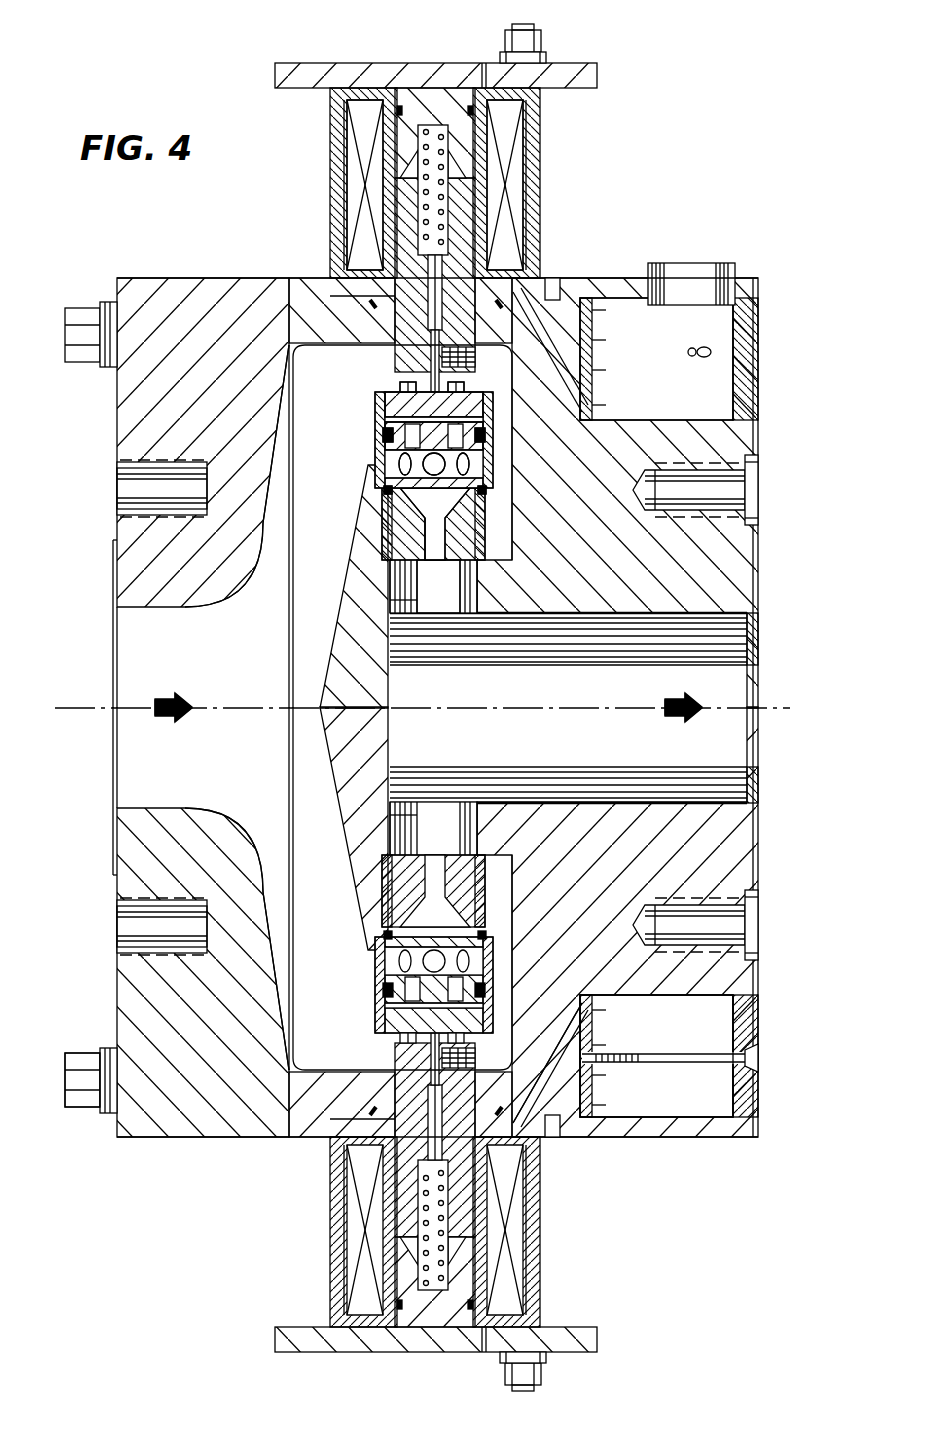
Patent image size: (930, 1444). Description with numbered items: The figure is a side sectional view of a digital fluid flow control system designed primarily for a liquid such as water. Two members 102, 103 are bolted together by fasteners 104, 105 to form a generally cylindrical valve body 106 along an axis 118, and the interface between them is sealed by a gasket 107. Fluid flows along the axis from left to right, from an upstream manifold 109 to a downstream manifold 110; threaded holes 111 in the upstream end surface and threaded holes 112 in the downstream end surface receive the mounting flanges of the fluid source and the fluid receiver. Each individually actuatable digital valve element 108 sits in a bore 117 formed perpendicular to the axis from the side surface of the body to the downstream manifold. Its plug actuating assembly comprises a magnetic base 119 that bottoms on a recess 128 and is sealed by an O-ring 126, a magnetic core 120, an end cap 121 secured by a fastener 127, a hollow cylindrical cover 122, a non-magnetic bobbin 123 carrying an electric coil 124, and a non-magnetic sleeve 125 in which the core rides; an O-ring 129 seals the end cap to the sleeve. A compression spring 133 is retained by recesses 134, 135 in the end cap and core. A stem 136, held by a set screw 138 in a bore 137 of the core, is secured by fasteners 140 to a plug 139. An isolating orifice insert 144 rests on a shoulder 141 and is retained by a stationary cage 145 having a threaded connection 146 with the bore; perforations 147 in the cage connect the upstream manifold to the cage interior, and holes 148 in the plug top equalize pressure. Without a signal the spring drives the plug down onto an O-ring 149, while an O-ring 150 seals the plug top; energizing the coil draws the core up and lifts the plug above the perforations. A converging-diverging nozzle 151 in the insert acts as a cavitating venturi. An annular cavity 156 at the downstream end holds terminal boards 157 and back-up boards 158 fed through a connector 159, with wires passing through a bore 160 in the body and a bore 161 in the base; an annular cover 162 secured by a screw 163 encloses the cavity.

The member 102 is at (625, 278).
The member 103 is at (218, 278).
The fastener 104 is at (85, 300).
The fastener 105 is at (95, 1050).
The valve body 106 is at (296, 238).
The gasket 107 is at (296, 370).
The digital valve element 108 is at (552, 272).
The upstream manifold 109 is at (220, 602).
The downstream manifold 110 is at (634, 630).
The threaded hole 111 is at (125, 485).
The threaded hole 112 is at (695, 490).
The bore 117 is at (386, 355).
The axis 118 is at (570, 703).
The base 119 is at (478, 348).
The core 120 is at (466, 210).
The end cap 121 is at (598, 72).
The cover 122 is at (535, 183).
The bobbin 123 is at (516, 101).
The electric coil 124 is at (337, 183).
The sleeve 125 is at (395, 216).
The O-ring 126 is at (348, 344).
The fastener 127 is at (545, 38).
The recess 128 is at (561, 286).
The O-ring 129 is at (483, 64).
The compression spring 133 is at (446, 170).
The recess 134 is at (433, 124).
The recess 135 is at (441, 232).
The stem 136 is at (495, 420).
The bore 137 is at (470, 292).
The set screw 138 is at (606, 342).
The plug 139 is at (447, 433).
The fastener 140 is at (400, 388).
The shoulder 141 is at (372, 560).
The isolating orifice insert 144 is at (481, 533).
The stationary cage 145 is at (500, 470).
The threaded connection 146 is at (500, 520).
The perforation 147 is at (378, 463).
The hole 148 is at (498, 440).
The O-ring 149 is at (496, 495).
The O-ring 150 is at (383, 437).
The converging-diverging nozzle 151 is at (440, 562).
The annular cavity 156 is at (656, 996).
The terminal board 157 is at (600, 390).
The back-up board 158 is at (602, 1005).
The connector 159 is at (690, 263).
The bore 160 is at (566, 372).
The bore 161 is at (602, 316).
The annular cover 162 is at (760, 300).
The screw 163 is at (760, 1056).